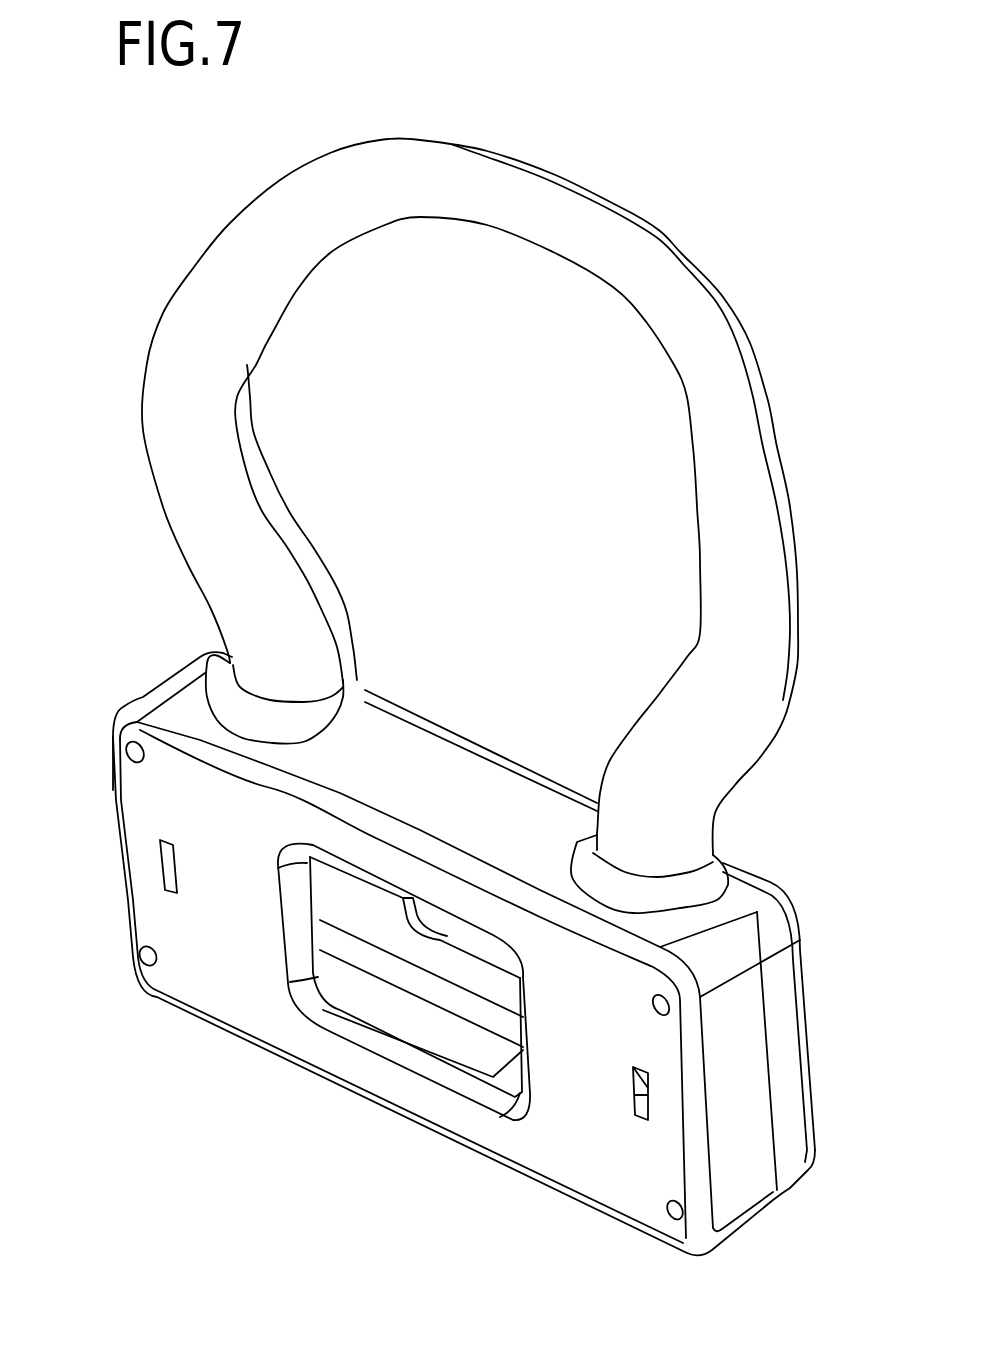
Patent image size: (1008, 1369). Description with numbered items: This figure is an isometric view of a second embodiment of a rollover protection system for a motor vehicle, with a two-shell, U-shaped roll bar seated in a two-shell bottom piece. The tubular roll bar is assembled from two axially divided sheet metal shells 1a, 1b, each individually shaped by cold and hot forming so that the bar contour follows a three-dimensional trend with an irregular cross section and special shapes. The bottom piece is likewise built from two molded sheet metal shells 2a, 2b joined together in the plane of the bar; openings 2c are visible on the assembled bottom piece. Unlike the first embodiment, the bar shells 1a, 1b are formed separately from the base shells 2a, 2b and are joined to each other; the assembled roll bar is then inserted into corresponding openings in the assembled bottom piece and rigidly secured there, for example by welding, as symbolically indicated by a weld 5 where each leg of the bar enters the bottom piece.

The tubular shell 1a is at (200, 508).
The tubular shell 1b is at (263, 477).
The molded shell 2a is at (373, 783).
The molded shell 2b is at (515, 790).
The fastening holes 2c is at (137, 740).
The weld 5 is at (230, 690).